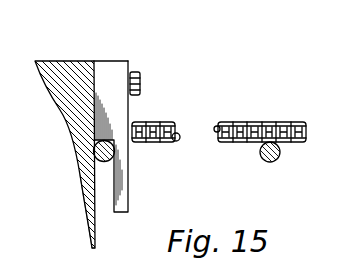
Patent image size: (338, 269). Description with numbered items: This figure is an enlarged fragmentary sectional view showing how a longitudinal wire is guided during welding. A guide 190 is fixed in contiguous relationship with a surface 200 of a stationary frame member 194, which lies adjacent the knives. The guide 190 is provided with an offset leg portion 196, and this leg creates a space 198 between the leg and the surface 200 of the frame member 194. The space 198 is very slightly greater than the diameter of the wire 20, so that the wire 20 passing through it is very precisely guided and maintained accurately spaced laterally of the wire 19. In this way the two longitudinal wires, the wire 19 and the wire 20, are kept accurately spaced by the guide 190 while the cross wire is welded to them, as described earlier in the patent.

The frame member 194 is at (77, 32).
The guide 190 is at (148, 40).
The offset leg portion 196 is at (129, 186).
The wire 20 is at (114, 152).
The surface 200 is at (86, 193).
The space 198 is at (104, 206).
The wire 19 is at (258, 163).